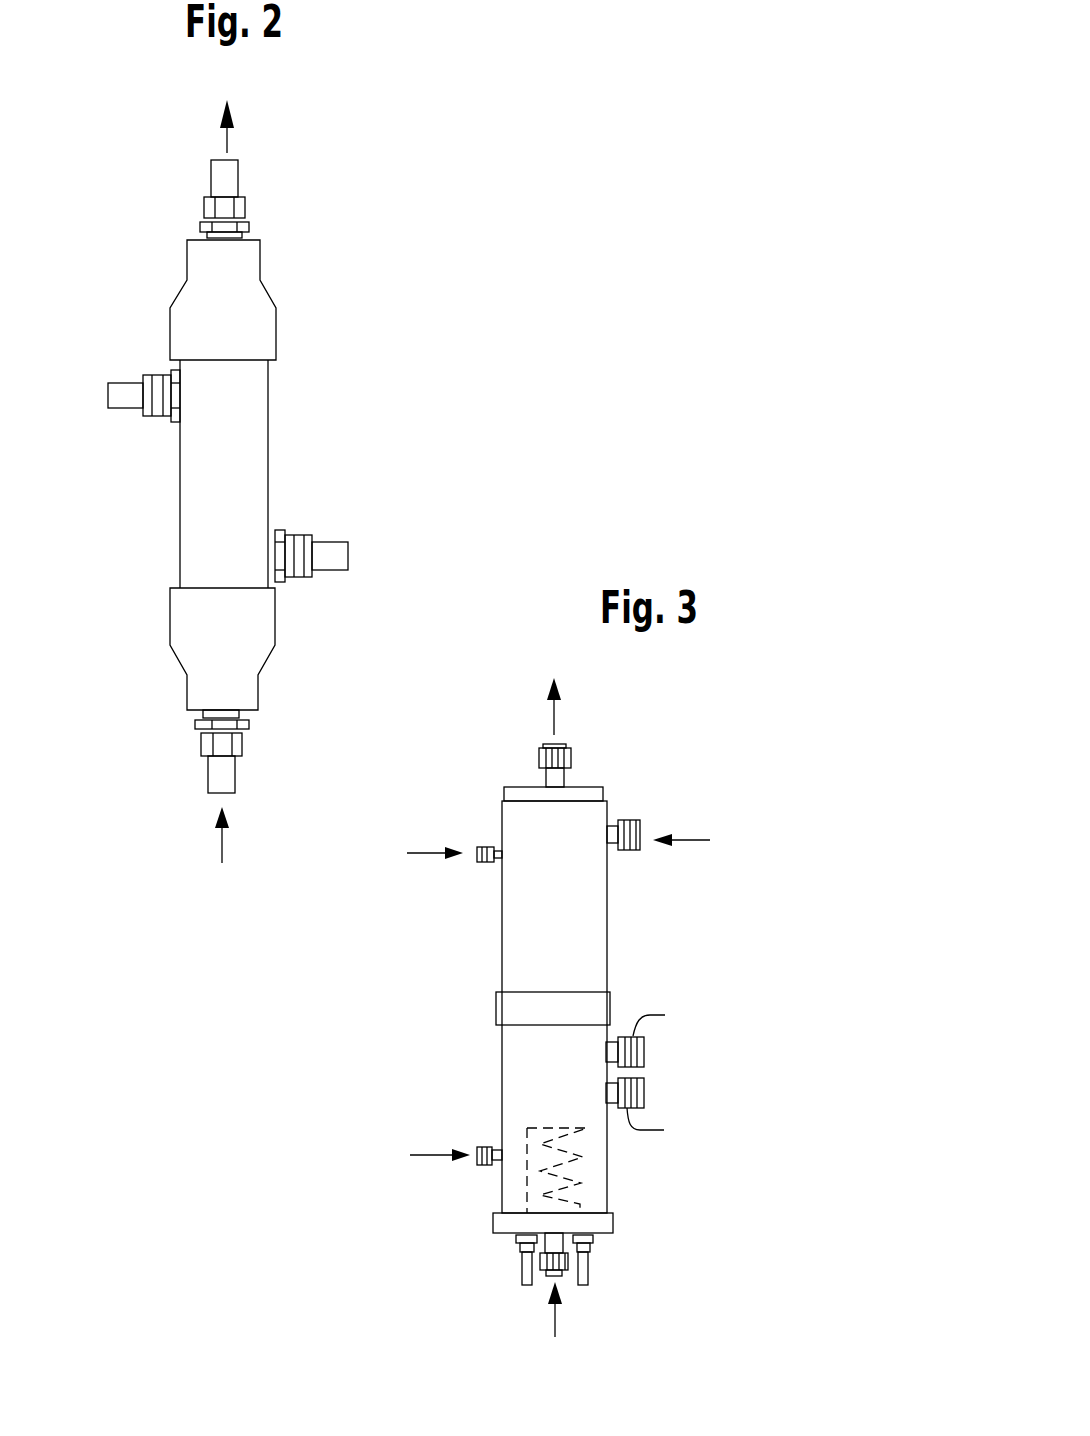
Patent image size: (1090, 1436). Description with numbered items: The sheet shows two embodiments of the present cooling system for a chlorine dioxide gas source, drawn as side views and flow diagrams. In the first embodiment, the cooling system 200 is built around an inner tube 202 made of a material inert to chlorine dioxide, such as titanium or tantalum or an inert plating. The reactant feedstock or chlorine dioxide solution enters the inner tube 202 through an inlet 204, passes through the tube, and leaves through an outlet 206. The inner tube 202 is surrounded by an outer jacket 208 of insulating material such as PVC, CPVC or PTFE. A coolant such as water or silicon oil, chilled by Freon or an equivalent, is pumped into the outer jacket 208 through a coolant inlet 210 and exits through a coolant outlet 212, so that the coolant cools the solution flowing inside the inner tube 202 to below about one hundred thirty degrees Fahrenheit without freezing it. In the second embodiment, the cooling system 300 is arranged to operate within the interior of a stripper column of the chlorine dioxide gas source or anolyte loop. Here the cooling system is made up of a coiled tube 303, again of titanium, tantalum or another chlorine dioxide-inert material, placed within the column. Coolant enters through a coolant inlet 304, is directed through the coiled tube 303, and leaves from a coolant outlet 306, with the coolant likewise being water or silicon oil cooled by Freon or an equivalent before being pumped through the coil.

In FIG. 2, the cooling system 200 is at (352, 302).
In FIG. 2, the inner tube 202 is at (238, 170).
In FIG. 2, the inlet 204 is at (233, 851).
In FIG. 2, the outlet 206 is at (251, 109).
In FIG. 2, the outer jacket 208 is at (178, 522).
In FIG. 2, the coolant inlet 210 is at (72, 394).
In FIG. 2, the coolant outlet 212 is at (412, 558).
In FIG. 3, the cooling system 300 is at (480, 764).
In FIG. 3, the coiled tube 303 is at (583, 1165).
In FIG. 3, the coolant inlet 304 is at (520, 1270).
In FIG. 3, the coolant outlet 306 is at (592, 1268).